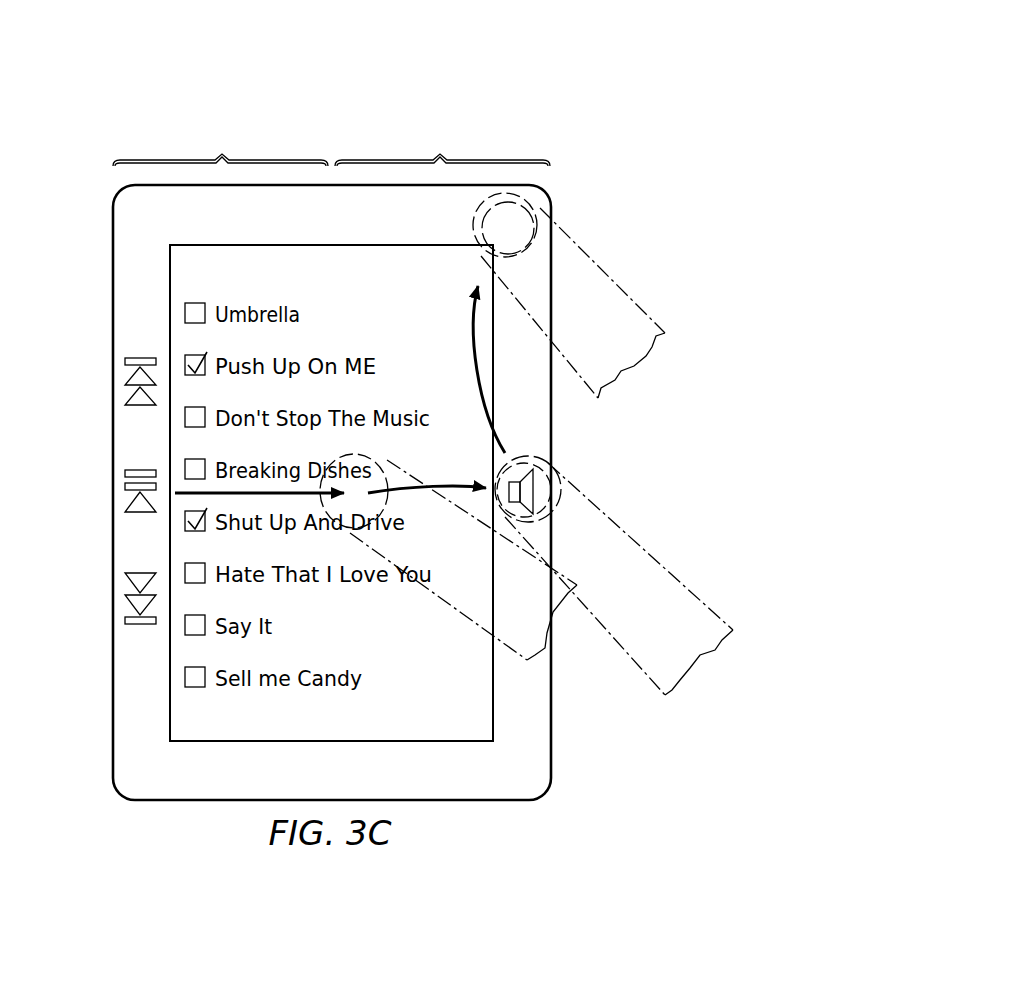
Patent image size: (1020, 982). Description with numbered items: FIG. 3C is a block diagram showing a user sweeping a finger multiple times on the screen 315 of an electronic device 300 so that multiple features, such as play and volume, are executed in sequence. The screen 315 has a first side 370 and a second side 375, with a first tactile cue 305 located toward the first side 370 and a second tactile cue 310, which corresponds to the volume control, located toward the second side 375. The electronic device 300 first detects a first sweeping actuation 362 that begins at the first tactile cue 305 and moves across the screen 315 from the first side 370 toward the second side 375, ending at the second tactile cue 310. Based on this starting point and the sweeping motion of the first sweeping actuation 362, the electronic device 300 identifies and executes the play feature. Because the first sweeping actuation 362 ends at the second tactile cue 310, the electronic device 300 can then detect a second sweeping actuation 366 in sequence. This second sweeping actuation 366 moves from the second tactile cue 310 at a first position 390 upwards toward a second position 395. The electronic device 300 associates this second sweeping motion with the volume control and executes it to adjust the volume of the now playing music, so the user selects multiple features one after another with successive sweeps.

The electronic device 300 is at (283, 60).
The first tactile cue 305 is at (127, 500).
The second tactile cue 310 is at (523, 495).
The screen 315 is at (190, 275).
The first sweeping actuation 362 is at (470, 623).
The second sweeping actuation 366 is at (683, 584).
The first side 370 is at (220, 132).
The second side 375 is at (442, 132).
The first position 390 is at (531, 432).
The second position 395 is at (454, 223).